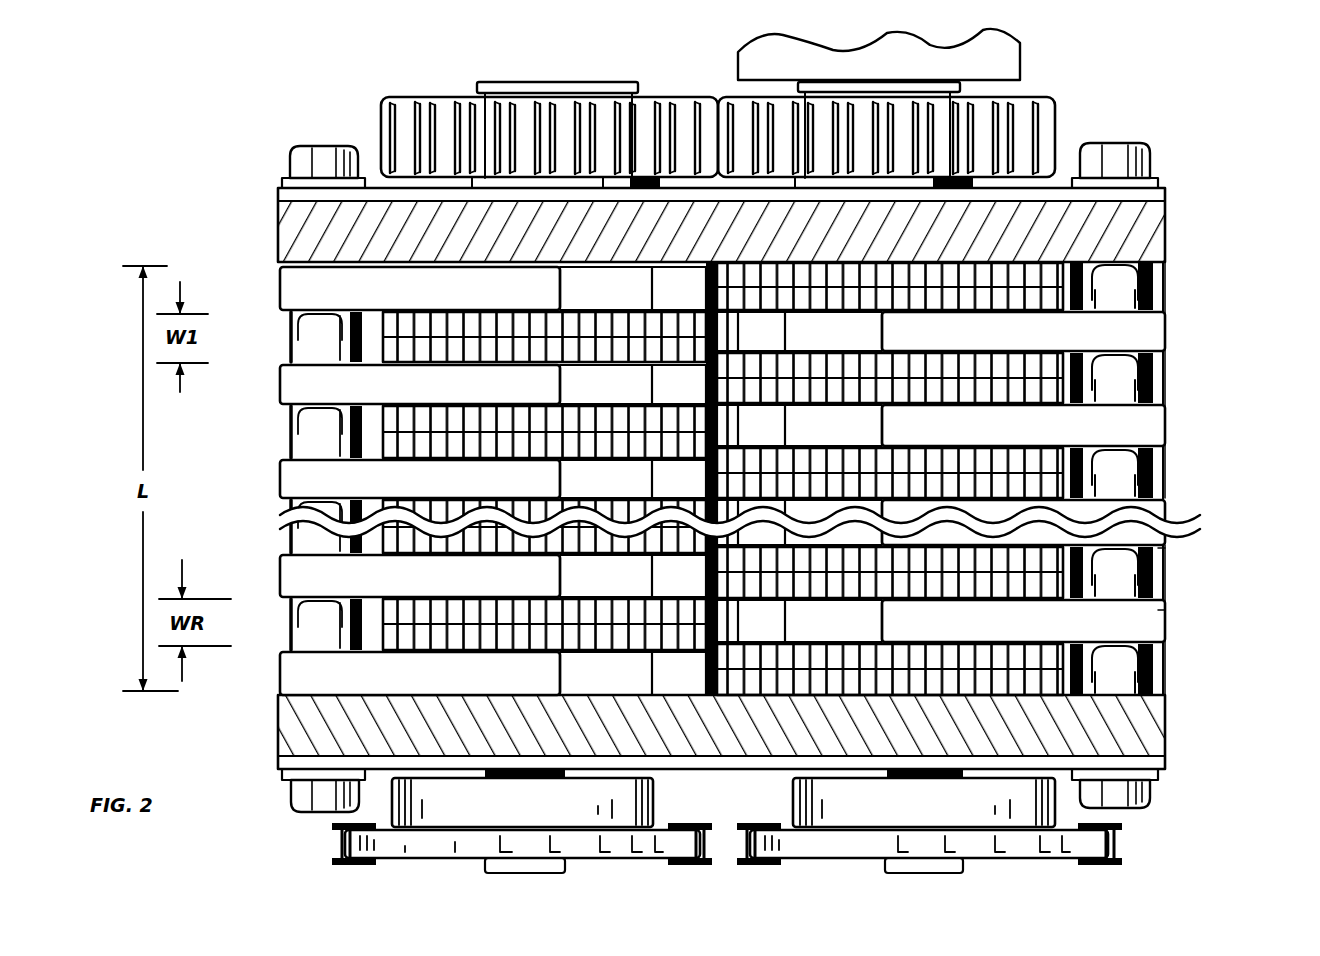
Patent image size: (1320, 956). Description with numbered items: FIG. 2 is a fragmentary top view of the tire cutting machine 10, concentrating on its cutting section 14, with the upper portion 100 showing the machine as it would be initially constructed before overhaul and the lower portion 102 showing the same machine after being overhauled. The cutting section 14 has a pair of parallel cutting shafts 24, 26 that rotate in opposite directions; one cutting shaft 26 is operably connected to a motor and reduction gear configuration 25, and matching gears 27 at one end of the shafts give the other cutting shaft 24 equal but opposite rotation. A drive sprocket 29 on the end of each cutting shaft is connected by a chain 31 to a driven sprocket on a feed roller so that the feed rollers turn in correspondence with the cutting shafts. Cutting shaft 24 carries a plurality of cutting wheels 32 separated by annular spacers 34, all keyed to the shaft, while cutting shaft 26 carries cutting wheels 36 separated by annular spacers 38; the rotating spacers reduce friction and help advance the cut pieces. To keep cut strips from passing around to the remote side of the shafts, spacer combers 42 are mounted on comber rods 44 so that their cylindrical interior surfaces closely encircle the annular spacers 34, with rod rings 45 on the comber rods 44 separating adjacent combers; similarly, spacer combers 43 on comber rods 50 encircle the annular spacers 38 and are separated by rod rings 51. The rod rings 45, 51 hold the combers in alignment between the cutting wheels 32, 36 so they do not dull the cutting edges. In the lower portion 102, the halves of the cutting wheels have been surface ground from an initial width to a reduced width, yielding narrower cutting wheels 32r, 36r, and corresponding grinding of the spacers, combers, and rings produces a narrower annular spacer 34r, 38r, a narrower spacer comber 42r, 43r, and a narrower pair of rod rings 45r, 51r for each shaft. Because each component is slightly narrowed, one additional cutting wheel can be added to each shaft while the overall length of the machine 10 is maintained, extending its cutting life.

The tire cutting machine 10 is at (320, 104).
The cutting section 14 is at (1178, 270).
The cutting shaft 24 is at (550, 82).
The motor and reduction gear configuration 25 is at (1000, 53).
The cutting shaft 26 is at (925, 90).
The matching gears 27 is at (420, 112).
The drive sprocket 29 is at (445, 858).
The chain 31 is at (335, 860).
The cutting wheels 32 is at (380, 347).
The narrower cutting wheel 32r is at (380, 620).
The annular spacer 34 is at (582, 284).
The narrower annular spacer 34r is at (585, 575).
The cutting wheels 36 is at (1078, 370).
The narrower cutting wheel 36r is at (1095, 570).
The annular spacer 38 is at (852, 337).
The narrower annular spacer 38r is at (840, 625).
The spacer comber 42 is at (292, 286).
The narrower spacer comber 42r is at (296, 668).
The spacer comber 43 is at (1160, 320).
The narrower spacer comber 43r is at (1160, 610).
The comber rods 44 is at (320, 147).
The rod rings 45 is at (303, 328).
The narrower rod rings 45r is at (303, 535).
The comber rods 50 is at (1115, 142).
The rod rings 51 is at (1068, 484).
The narrower rod rings 51r is at (1160, 548).
The upper portion 100 is at (1228, 292).
The lower portion 102 is at (1238, 598).